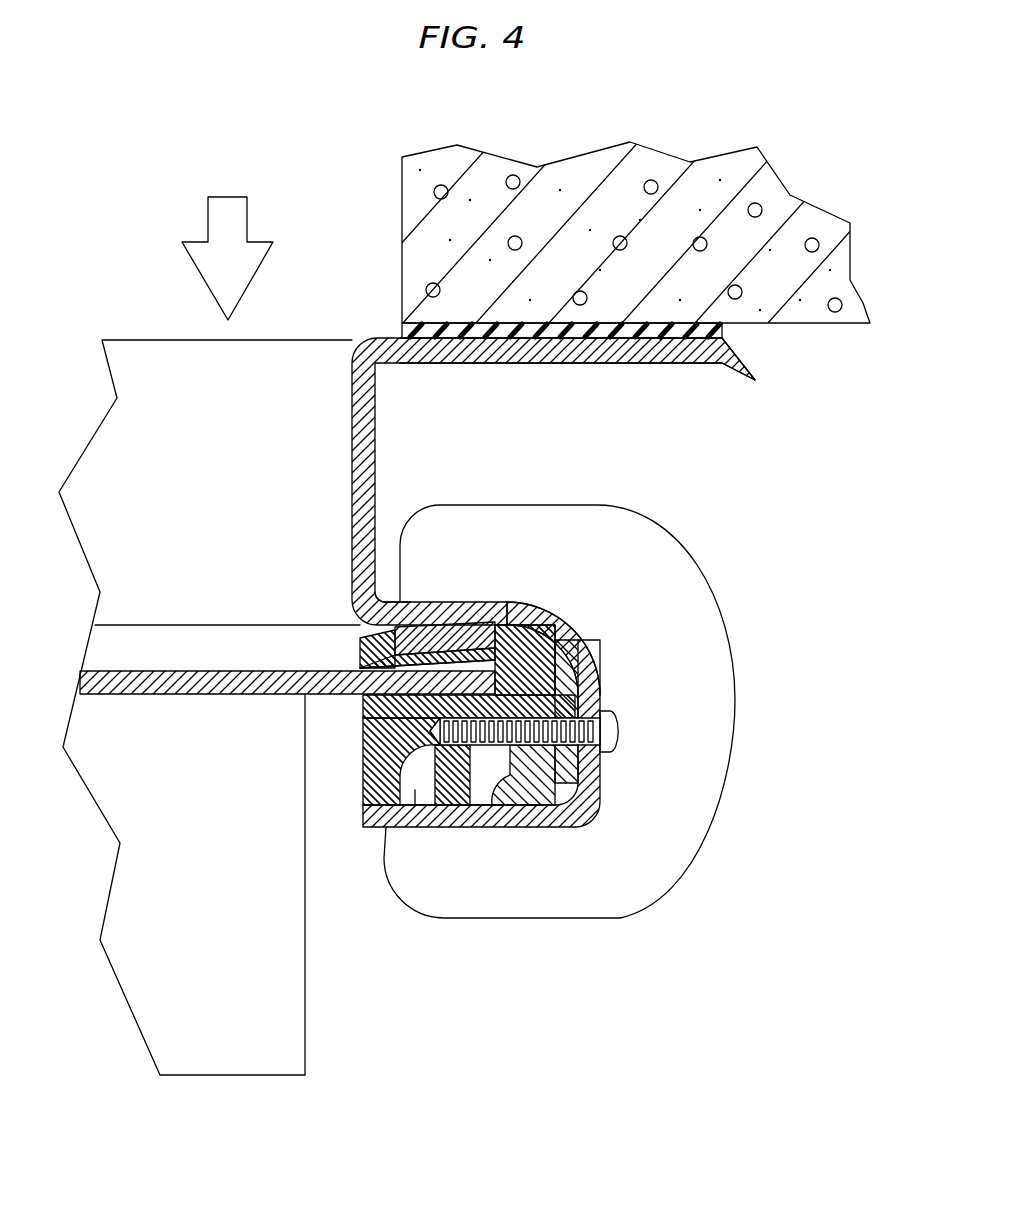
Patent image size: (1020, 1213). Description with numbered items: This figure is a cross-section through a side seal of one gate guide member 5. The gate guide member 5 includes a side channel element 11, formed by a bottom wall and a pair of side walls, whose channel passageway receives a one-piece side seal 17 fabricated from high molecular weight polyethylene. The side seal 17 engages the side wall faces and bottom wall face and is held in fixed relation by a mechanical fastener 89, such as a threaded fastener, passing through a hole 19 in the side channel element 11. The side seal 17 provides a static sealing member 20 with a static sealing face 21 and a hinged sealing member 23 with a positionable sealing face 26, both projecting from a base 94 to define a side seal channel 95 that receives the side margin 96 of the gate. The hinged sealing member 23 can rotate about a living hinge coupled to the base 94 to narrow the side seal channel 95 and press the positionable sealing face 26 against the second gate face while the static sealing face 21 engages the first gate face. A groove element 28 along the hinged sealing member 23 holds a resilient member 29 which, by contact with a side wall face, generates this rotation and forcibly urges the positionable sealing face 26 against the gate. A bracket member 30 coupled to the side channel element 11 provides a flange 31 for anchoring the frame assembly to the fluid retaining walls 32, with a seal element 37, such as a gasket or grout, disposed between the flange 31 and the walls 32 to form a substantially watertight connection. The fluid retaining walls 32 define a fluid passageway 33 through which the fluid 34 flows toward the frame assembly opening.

The gate guide member 5 is at (540, 836).
The side channel element 11 is at (578, 828).
The side seal 17 is at (345, 764).
The hole 19 is at (600, 760).
The static sealing member 20 is at (594, 690).
The static sealing face 21 is at (575, 660).
The hinged sealing member 23 is at (497, 640).
The positionable sealing face 26 is at (462, 648).
The groove element 28 is at (405, 640).
The resilient member 29 is at (397, 622).
The bracket member 30 is at (352, 445).
The flange 31 is at (600, 363).
The fluid retaining wall 32 is at (584, 224).
The fluid passageway 33 is at (328, 312).
The fluid 34 is at (215, 270).
The seal element 37 is at (735, 332).
The mechanical fastener 89 is at (620, 735).
The base 94 is at (598, 660).
The side seal channel 95 is at (560, 630).
The side margin 96 is at (420, 680).